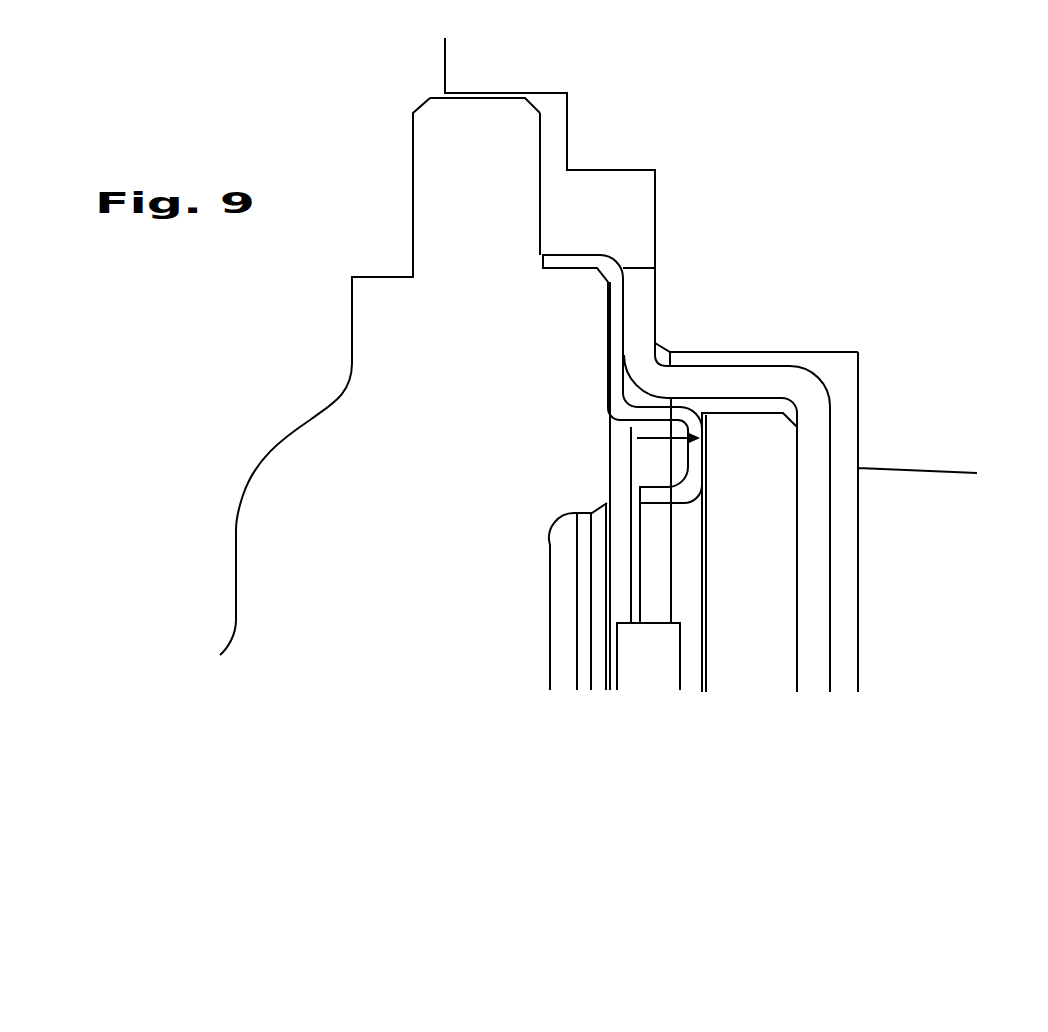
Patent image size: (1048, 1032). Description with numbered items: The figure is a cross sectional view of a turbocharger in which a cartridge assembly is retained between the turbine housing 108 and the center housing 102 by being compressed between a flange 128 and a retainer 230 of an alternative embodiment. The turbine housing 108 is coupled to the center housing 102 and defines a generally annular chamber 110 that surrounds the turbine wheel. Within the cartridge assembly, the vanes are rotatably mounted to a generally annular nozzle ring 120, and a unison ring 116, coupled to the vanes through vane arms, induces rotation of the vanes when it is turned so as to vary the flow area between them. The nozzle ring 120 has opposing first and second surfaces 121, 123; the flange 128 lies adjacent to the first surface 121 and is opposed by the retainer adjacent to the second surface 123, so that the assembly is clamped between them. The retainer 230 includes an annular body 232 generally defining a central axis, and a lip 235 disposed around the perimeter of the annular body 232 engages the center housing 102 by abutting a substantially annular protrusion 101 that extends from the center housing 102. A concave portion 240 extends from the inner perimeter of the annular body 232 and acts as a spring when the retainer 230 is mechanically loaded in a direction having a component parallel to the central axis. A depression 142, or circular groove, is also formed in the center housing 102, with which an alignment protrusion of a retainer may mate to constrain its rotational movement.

The annular protrusion 101 is at (557, 270).
The center housing 102 is at (400, 567).
The turbine housing 108 is at (785, 289).
The annular chamber 110 is at (942, 601).
The unison ring 116 is at (648, 653).
The nozzle ring 120 is at (773, 527).
The first surface 121 is at (797, 655).
The second surface 123 is at (703, 650).
The flange 128 is at (638, 295).
The depression 142 is at (830, 452).
The retainer 230 is at (604, 428).
The annular body 232 is at (615, 335).
The lip 235 is at (580, 262).
The concave portion 240 is at (688, 412).